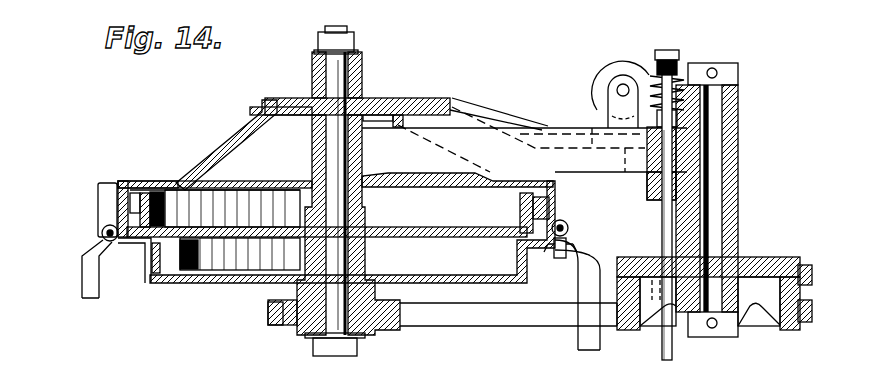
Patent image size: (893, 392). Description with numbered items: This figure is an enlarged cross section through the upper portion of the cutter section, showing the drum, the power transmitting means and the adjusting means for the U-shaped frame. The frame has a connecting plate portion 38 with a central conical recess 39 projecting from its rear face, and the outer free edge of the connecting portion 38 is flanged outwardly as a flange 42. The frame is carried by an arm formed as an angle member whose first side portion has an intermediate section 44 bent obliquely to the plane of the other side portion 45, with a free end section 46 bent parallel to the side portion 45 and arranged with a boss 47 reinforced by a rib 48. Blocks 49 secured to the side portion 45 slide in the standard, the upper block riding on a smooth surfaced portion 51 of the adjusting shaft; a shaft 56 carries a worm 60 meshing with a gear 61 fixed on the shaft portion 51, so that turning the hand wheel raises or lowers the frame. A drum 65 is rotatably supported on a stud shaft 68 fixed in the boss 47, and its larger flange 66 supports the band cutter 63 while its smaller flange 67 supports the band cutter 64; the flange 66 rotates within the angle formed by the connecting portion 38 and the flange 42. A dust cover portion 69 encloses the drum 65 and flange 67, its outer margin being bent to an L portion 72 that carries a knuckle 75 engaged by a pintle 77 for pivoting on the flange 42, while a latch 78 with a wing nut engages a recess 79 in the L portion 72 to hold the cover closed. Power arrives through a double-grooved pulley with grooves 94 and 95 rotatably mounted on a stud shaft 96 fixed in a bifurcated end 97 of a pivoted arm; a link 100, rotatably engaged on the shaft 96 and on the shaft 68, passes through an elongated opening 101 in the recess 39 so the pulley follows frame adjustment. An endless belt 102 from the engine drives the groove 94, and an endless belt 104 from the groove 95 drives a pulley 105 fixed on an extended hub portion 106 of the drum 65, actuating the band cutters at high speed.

The connecting plate portion 38 is at (150, 181).
The central conical recess 39 is at (215, 155).
The flange 42 is at (105, 200).
The intermediate section 44 is at (505, 120).
The side portion 45 is at (648, 176).
The free end section 46 is at (445, 100).
The boss 47 is at (312, 72).
The rib 48 is at (405, 82).
The blocks 49 is at (605, 98).
The smooth surfaced portion 51 is at (623, 84).
The shaft 56 is at (662, 222).
The worm 60 is at (690, 68).
The gear 61 is at (640, 70).
The band cutter 63 is at (130, 208).
The band cutter 64 is at (150, 256).
The drum 65 is at (260, 255).
The flange 66 is at (128, 183).
The flange 67 is at (176, 280).
The stud shaft 68 is at (355, 62).
The cover portion 69 is at (212, 285).
The L portion 72 is at (143, 295).
The knuckle 75 is at (95, 265).
The pintle 77 is at (102, 236).
The latch 78 is at (570, 228).
The recess 79 is at (572, 246).
The pulley groove 94 is at (785, 260).
The pulley groove 95 is at (790, 325).
The stud shaft 96 is at (738, 155).
The bifurcated end 97 is at (738, 112).
The link 100 is at (676, 192).
The elongated opening 101 is at (504, 139).
The endless belt 102 is at (812, 277).
The endless belt 104 is at (487, 312).
The pulley 105 is at (280, 325).
The extended hub portion 106 is at (330, 348).